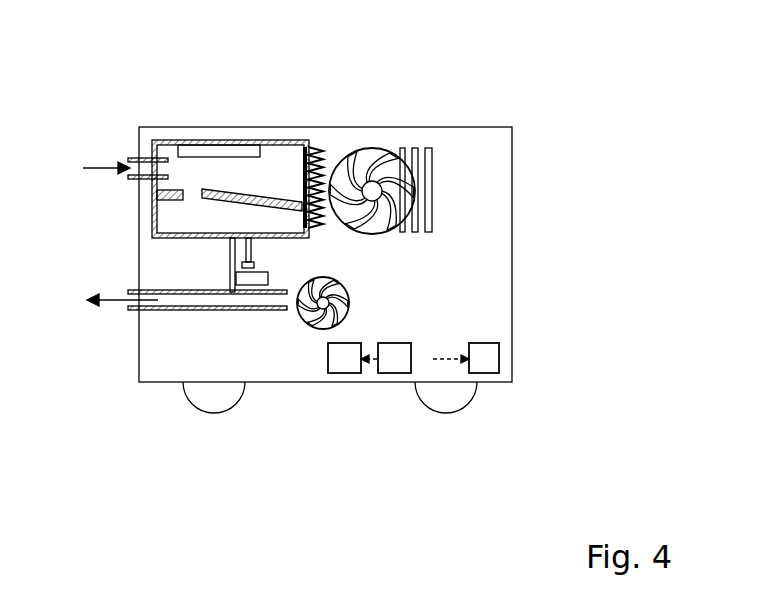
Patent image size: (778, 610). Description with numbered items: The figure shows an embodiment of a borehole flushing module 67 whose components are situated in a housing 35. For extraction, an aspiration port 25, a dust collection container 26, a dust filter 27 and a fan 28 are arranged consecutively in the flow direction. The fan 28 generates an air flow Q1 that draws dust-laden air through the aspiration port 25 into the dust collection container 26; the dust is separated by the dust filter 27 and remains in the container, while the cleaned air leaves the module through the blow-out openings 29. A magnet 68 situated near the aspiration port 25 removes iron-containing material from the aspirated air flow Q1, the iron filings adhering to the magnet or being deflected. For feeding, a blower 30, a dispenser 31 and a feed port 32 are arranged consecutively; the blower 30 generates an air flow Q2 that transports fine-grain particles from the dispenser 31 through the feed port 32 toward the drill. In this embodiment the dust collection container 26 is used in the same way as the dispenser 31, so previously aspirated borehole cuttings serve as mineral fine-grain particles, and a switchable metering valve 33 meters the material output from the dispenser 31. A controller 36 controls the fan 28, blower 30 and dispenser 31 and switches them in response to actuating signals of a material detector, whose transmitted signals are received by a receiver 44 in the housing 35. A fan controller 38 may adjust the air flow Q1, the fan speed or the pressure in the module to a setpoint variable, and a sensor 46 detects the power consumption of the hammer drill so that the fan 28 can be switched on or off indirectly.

The borehole flushing module 67 is at (552, 85).
The housing 35 is at (503, 238).
The air flow Q1 is at (104, 150).
The air flow Q2 is at (117, 305).
The aspiration port 25 is at (139, 133).
The magnet 68 is at (222, 153).
The dust collection container 26 is at (284, 190).
The dust filter 27 is at (313, 168).
The fan 28 is at (372, 190).
The blow-out openings 29 is at (428, 180).
The dispenser 31 is at (207, 218).
The feed port 32 is at (133, 310).
The metering valve 33 is at (243, 280).
The blower 30 is at (325, 302).
The fan controller 38 is at (345, 358).
The controller 36 is at (396, 358).
The receiver 44 is at (440, 360).
The sensor 46 is at (485, 358).